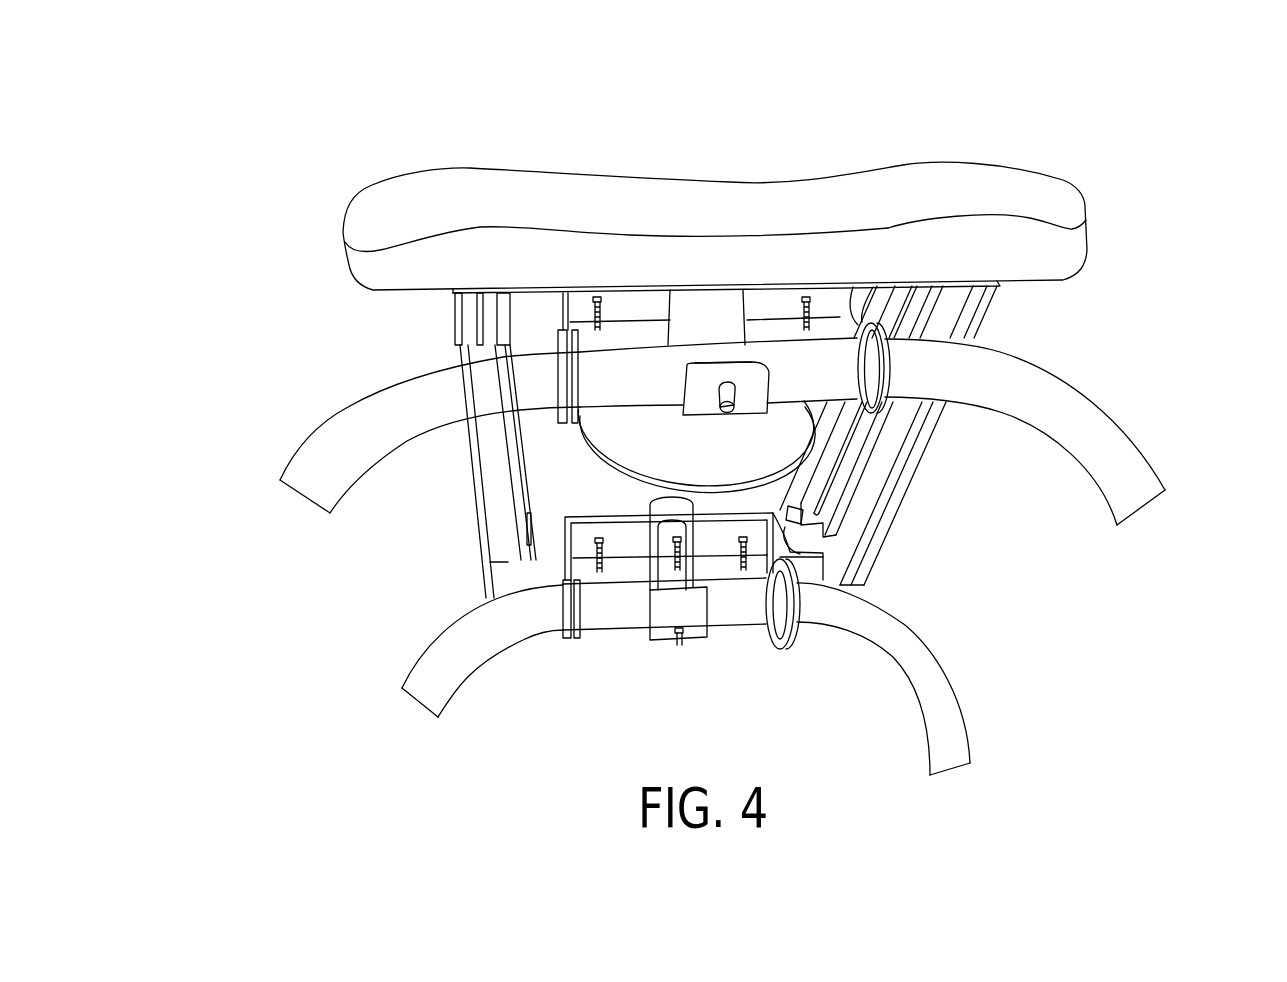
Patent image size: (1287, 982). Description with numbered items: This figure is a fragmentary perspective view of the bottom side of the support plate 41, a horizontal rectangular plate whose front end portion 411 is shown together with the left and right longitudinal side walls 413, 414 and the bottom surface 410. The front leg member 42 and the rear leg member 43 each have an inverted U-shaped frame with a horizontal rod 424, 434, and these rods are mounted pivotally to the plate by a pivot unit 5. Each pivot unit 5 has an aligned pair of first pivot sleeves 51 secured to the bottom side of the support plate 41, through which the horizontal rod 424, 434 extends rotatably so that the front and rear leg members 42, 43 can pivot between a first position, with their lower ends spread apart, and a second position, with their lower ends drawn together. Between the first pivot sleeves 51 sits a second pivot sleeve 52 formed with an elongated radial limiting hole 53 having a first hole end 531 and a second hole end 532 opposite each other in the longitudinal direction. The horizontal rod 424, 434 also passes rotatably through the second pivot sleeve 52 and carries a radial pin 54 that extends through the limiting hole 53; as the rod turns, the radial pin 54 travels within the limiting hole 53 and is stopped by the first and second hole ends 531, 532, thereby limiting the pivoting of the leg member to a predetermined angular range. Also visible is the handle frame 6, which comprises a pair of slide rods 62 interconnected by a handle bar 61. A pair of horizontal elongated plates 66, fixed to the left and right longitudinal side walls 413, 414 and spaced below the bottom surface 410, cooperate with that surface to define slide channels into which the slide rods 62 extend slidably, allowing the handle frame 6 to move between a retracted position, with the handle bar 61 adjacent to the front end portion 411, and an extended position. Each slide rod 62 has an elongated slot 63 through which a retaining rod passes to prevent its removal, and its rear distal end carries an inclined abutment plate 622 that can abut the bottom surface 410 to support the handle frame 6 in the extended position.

The handle frame 6 is at (1073, 188).
The handle bar 61 is at (557, 200).
The slide rod 62 is at (460, 330).
The abutment plate 622 is at (523, 517).
The elongated slot 63 is at (828, 505).
The horizontal elongated plate 66 is at (812, 490).
The support plate 41 is at (933, 421).
The bottom surface 410 is at (532, 436).
The front end portion 411 is at (788, 297).
The left longitudinal side wall 413 is at (977, 318).
The right longitudinal side wall 414 is at (460, 345).
The horizontal rod 424 is at (617, 370).
The front leg member 42 is at (1138, 437).
The rear leg member 43 is at (963, 708).
The horizontal rod 434 is at (732, 617).
The pivot unit 5 is at (905, 379).
The first pivot sleeve 51 is at (560, 313).
The second pivot sleeve 52 is at (750, 372).
The limiting hole 53 is at (722, 387).
The first hole end 531 is at (728, 383).
The second hole end 532 is at (808, 438).
The radial pin 54 is at (720, 411).